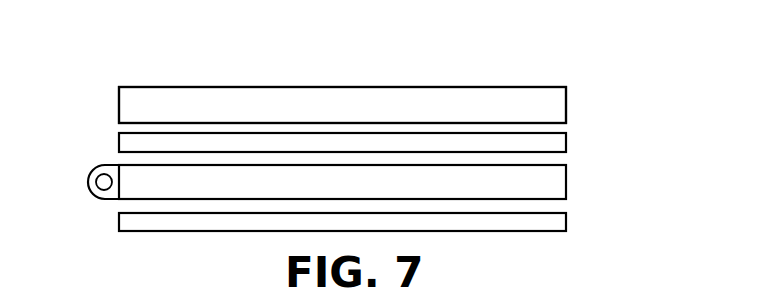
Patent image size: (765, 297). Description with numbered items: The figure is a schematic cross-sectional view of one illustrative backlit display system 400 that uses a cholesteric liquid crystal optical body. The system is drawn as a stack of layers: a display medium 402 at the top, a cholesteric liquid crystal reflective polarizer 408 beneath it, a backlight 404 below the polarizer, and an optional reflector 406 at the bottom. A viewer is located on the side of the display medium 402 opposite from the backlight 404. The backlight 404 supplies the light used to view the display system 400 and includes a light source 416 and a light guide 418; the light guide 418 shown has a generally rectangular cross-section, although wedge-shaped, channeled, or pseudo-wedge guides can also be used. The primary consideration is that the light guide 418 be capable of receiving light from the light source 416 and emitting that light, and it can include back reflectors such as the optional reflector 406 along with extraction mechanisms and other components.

The backlit display system 400 is at (172, 56).
The display medium 402 is at (553, 102).
The cholesteric liquid crystal reflective polarizer 408 is at (553, 139).
The backlight 404 is at (553, 178).
The light guide 418 is at (119, 166).
The light source 416 is at (96, 183).
The optional reflector 406 is at (131, 222).